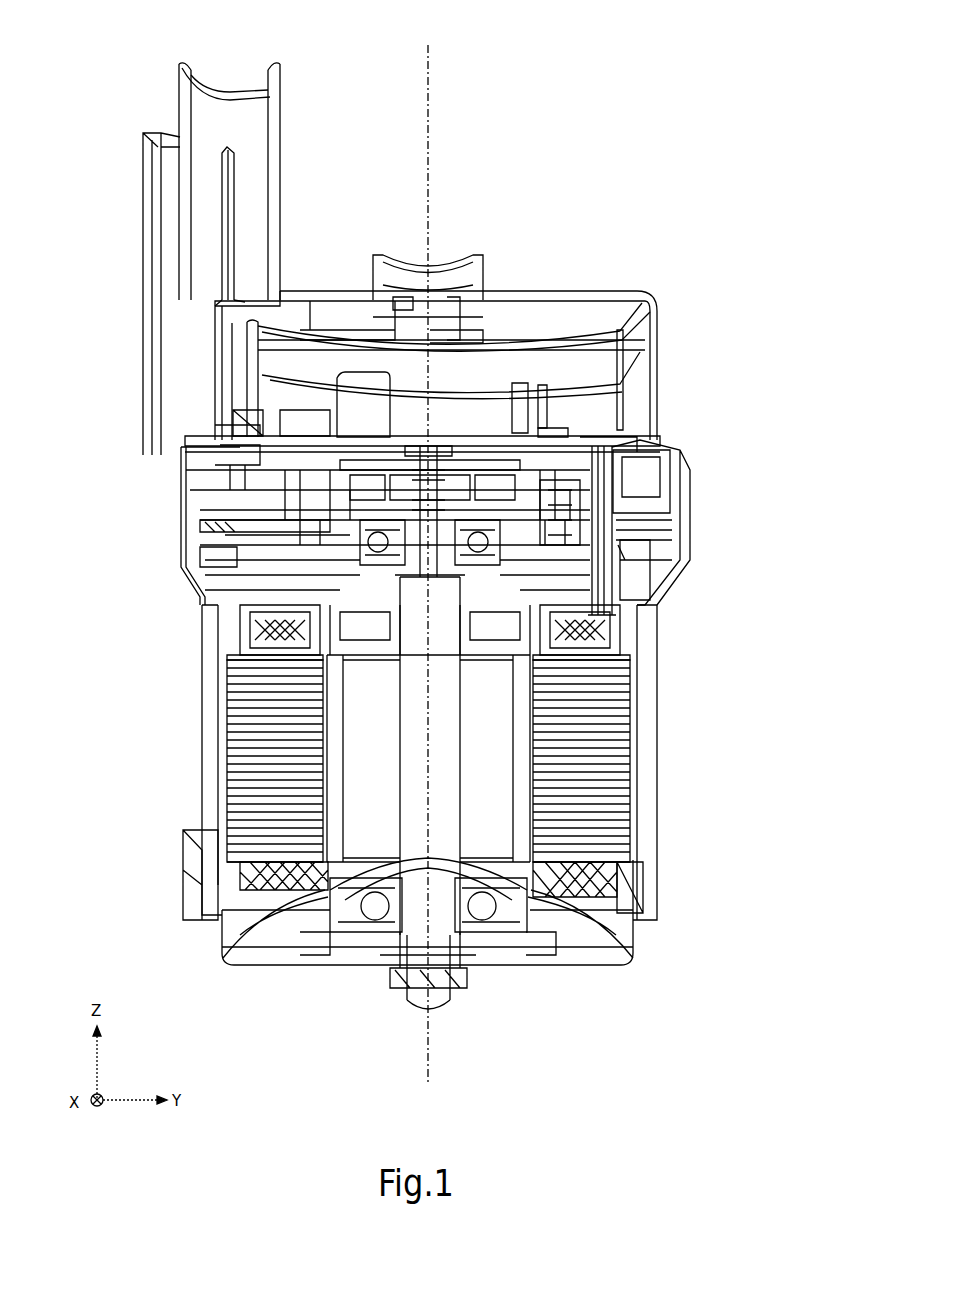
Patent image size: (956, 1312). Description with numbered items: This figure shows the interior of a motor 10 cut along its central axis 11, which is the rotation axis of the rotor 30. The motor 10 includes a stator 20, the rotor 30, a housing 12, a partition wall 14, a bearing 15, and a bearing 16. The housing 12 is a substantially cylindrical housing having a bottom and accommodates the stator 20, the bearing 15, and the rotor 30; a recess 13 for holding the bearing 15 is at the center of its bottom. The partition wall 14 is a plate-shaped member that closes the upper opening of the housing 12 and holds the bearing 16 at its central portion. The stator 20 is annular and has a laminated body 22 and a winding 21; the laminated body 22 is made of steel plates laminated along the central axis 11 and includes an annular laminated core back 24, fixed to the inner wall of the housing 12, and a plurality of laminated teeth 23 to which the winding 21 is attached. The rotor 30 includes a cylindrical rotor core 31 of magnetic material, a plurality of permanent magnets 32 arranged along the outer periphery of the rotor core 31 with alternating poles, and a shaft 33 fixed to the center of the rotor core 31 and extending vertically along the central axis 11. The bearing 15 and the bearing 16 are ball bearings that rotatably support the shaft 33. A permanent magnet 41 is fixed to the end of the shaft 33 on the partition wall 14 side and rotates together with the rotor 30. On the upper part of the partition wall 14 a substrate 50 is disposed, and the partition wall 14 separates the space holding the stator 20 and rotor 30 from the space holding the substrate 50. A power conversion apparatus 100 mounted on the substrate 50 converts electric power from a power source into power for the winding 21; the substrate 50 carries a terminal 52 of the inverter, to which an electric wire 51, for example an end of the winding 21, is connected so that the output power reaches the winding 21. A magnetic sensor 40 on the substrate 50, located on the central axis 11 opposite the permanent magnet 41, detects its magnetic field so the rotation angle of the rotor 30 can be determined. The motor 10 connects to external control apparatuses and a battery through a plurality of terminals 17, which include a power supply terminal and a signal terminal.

The motor 10 is at (547, 90).
The central axis 11 is at (428, 220).
The housing 12 is at (643, 888).
The recess 13 is at (285, 920).
The partition wall 14 is at (227, 532).
The bearing 15 is at (358, 908).
The bearing 16 is at (370, 550).
The terminals 17 is at (229, 150).
The stator 20 is at (513, 766).
The winding 21 is at (598, 635).
The laminated body 22 is at (489, 778).
The laminated teeth 23 is at (577, 747).
The laminated core back 24 is at (632, 767).
The rotor 30 is at (309, 792).
The rotor core 31 is at (367, 773).
The permanent magnets 32 is at (332, 747).
The shaft 33 is at (408, 812).
The magnetic sensor 40 is at (417, 445).
The permanent magnet 41 is at (403, 480).
The substrate 50 is at (237, 437).
The electric wire 51 is at (602, 532).
The terminal 52 is at (607, 438).
The power conversion apparatus 100 is at (560, 425).